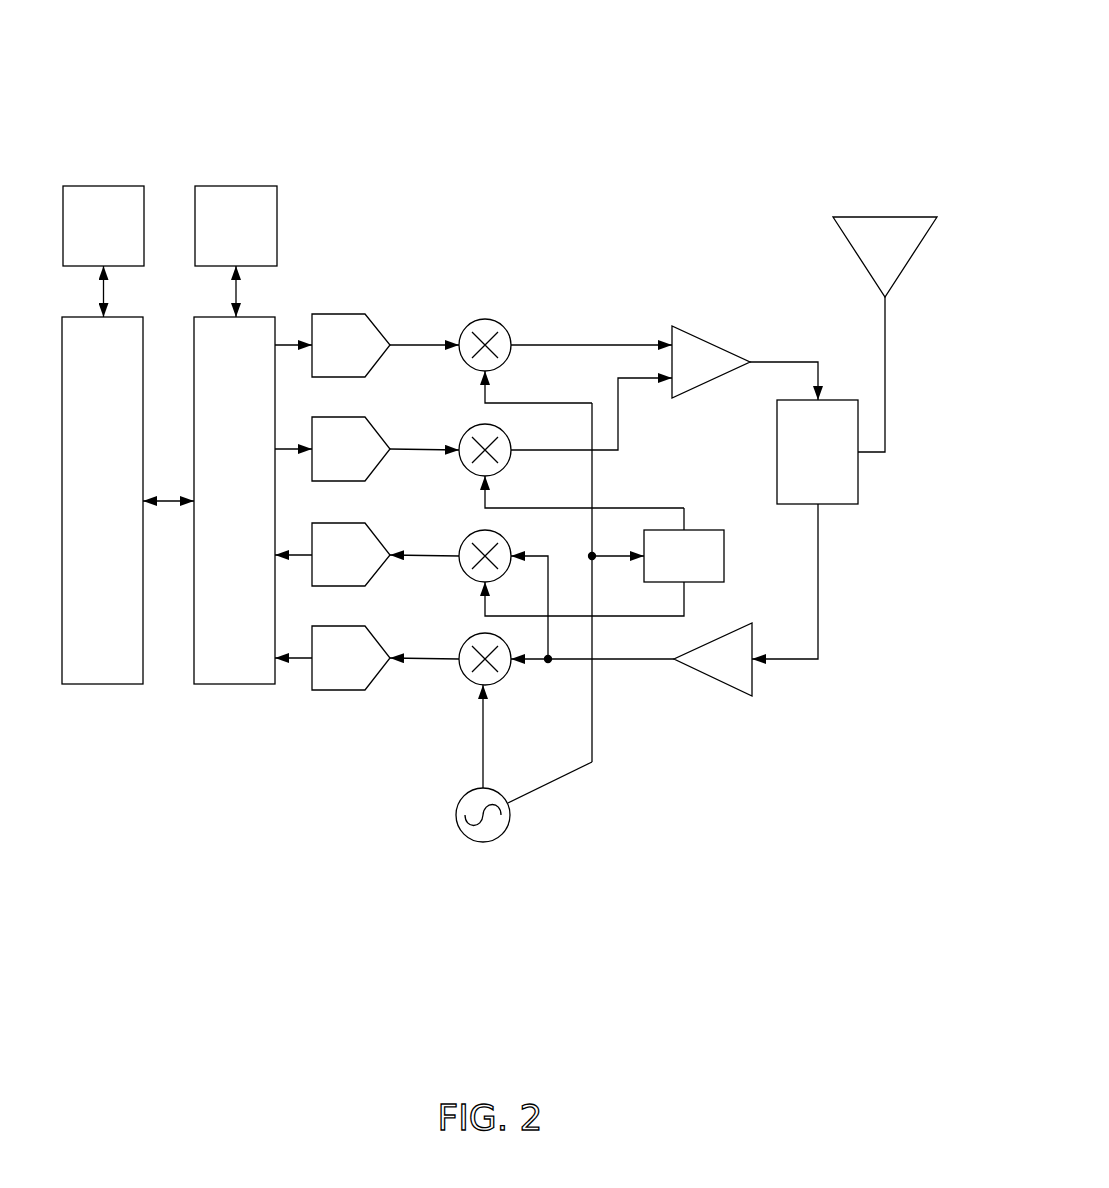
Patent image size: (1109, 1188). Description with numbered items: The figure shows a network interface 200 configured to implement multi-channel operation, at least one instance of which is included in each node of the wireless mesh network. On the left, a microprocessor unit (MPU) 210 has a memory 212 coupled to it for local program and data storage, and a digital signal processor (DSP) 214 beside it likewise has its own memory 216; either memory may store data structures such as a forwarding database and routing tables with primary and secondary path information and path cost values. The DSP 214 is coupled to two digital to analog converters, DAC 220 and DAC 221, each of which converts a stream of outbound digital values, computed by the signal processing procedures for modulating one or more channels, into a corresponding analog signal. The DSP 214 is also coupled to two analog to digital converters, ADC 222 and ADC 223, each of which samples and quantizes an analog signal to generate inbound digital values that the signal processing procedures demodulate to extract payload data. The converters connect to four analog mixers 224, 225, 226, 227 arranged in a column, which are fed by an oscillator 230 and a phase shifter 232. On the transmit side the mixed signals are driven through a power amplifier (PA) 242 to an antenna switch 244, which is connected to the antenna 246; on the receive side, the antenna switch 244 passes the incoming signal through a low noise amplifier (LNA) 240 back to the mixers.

The network interface 200 is at (657, 138).
The microprocessor unit 210 is at (84, 524).
The memory 212 is at (85, 251).
The digital signal processor 214 is at (216, 524).
The memory 216 is at (255, 251).
The digital to analog converter 220 is at (357, 369).
The digital to analog converter 221 is at (357, 473).
The analog to digital converter 222 is at (357, 579).
The analog to digital converter 223 is at (357, 682).
The analog mixer 224 is at (471, 320).
The analog mixer 225 is at (469, 426).
The analog mixer 226 is at (469, 532).
The analog mixer 227 is at (471, 634).
The oscillator 230 is at (460, 797).
The phase shifter 232 is at (663, 567).
The low noise amplifier 240 is at (710, 678).
The power amplifier 242 is at (690, 334).
The antenna switch 244 is at (797, 462).
The antenna 246 is at (850, 240).